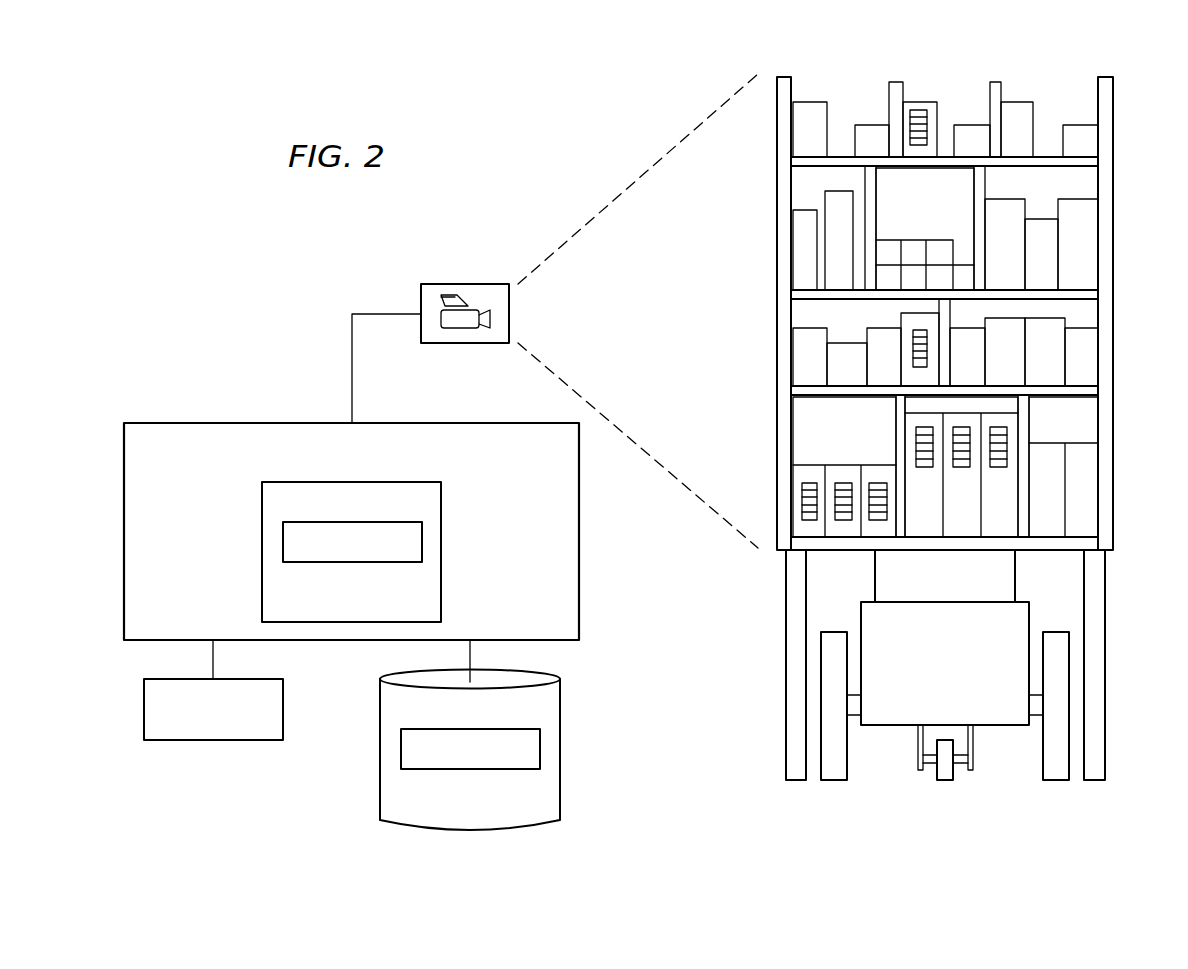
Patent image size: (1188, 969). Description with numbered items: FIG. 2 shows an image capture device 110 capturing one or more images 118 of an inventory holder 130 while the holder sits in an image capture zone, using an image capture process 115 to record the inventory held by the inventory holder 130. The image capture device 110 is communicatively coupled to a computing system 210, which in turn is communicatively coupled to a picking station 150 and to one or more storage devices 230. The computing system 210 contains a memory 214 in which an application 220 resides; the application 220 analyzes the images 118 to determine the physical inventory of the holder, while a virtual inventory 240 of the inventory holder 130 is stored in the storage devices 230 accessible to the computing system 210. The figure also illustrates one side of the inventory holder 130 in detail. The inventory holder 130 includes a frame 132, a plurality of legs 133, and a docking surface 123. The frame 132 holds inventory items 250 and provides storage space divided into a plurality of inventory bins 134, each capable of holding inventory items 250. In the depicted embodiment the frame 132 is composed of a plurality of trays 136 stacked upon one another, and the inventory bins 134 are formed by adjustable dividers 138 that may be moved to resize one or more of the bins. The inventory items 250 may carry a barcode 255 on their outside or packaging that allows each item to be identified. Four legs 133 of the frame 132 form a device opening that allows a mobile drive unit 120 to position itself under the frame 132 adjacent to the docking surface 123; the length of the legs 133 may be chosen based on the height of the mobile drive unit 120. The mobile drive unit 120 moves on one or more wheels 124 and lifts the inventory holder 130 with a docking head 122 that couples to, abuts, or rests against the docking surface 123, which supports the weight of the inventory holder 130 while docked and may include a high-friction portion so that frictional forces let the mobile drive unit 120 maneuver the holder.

The image capture device 110 is at (465, 284).
The image capture process 115 is at (635, 185).
The images 118 is at (342, 383).
The mobile drive unit 120 is at (963, 675).
The docking head 122 is at (962, 588).
The docking surface 123 is at (1047, 556).
The wheels 124 is at (835, 782).
The inventory holder 130 is at (761, 61).
The frame 132 is at (764, 307).
The legs 133 is at (793, 680).
The inventory bins 134 is at (1090, 103).
The trays 136 is at (1103, 137).
The adjustable dividers 138 is at (872, 210).
The picking station 150 is at (144, 710).
The computing system 210 is at (203, 416).
The memory 214 is at (260, 553).
The application 220 is at (352, 563).
The storage devices 230 is at (564, 751).
The virtual inventory 240 is at (470, 770).
The inventory items 250 is at (810, 475).
The barcode 255 is at (800, 495).